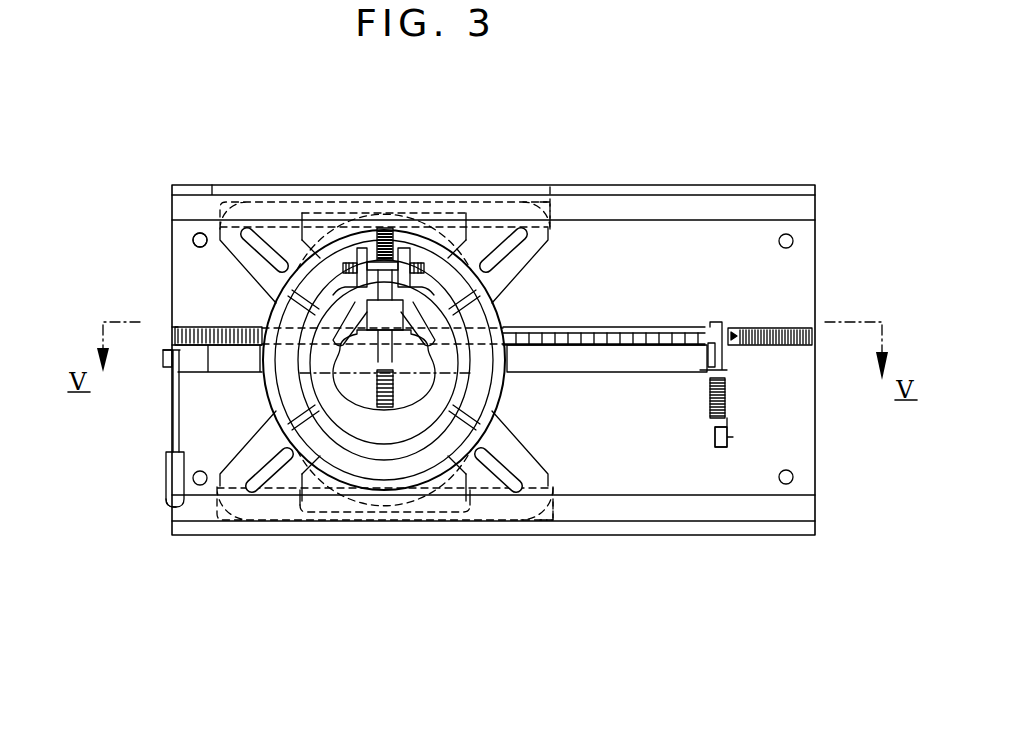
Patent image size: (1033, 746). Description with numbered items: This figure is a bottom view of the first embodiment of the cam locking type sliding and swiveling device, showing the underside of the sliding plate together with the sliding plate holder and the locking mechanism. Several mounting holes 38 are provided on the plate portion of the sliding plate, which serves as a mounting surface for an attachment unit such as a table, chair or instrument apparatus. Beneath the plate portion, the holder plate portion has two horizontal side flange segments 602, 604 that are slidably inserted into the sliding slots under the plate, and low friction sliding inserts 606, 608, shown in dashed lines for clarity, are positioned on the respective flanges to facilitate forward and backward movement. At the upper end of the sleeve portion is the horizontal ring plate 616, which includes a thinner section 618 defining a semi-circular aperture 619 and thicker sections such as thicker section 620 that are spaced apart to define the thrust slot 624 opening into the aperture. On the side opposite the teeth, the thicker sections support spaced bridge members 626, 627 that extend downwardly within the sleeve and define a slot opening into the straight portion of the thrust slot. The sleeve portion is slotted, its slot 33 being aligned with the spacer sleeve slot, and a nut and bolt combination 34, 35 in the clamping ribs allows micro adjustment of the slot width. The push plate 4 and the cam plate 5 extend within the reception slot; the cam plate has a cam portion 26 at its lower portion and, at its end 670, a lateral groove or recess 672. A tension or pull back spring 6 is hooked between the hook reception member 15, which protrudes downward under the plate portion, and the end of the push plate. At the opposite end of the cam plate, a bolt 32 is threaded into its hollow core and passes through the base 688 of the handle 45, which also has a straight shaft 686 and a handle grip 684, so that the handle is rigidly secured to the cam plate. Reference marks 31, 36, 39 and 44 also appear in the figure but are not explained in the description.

The push plate 4 is at (723, 358).
The cam plate 5 is at (648, 372).
The tension or pull back spring 6 is at (725, 398).
The hook reception member 15 is at (725, 452).
The cam portion 26 is at (222, 362).
The rack end 31 is at (167, 343).
The bolt 32 is at (158, 353).
The slot 33 is at (392, 228).
The nut and bolt combination 34 is at (357, 248).
The nut and bolt combination 35 is at (413, 258).
The plunger shaft 36 is at (405, 295).
The mounting holes 38 is at (195, 239).
The yoke 39 is at (418, 318).
The toothed rack 44 is at (195, 362).
The handle 45 is at (172, 423).
The side flange segment 602 is at (240, 200).
The side flange segment 604 is at (247, 508).
The low friction sliding insert 606 is at (550, 208).
The low friction sliding insert 608 is at (550, 497).
The ring plate 616 is at (440, 416).
The thinner section 618 is at (318, 382).
The semi-circular aperture 619 is at (355, 392).
The thicker section 620 is at (430, 317).
The thrust slot 624 is at (452, 332).
The bridge member 626 is at (412, 292).
The bridge member 627 is at (355, 305).
The end of cam plate 670 is at (677, 360).
The lateral groove or recess 672 is at (723, 377).
The handle grip 684 is at (170, 500).
The straight shaft 686 is at (173, 433).
The base 688 is at (165, 378).